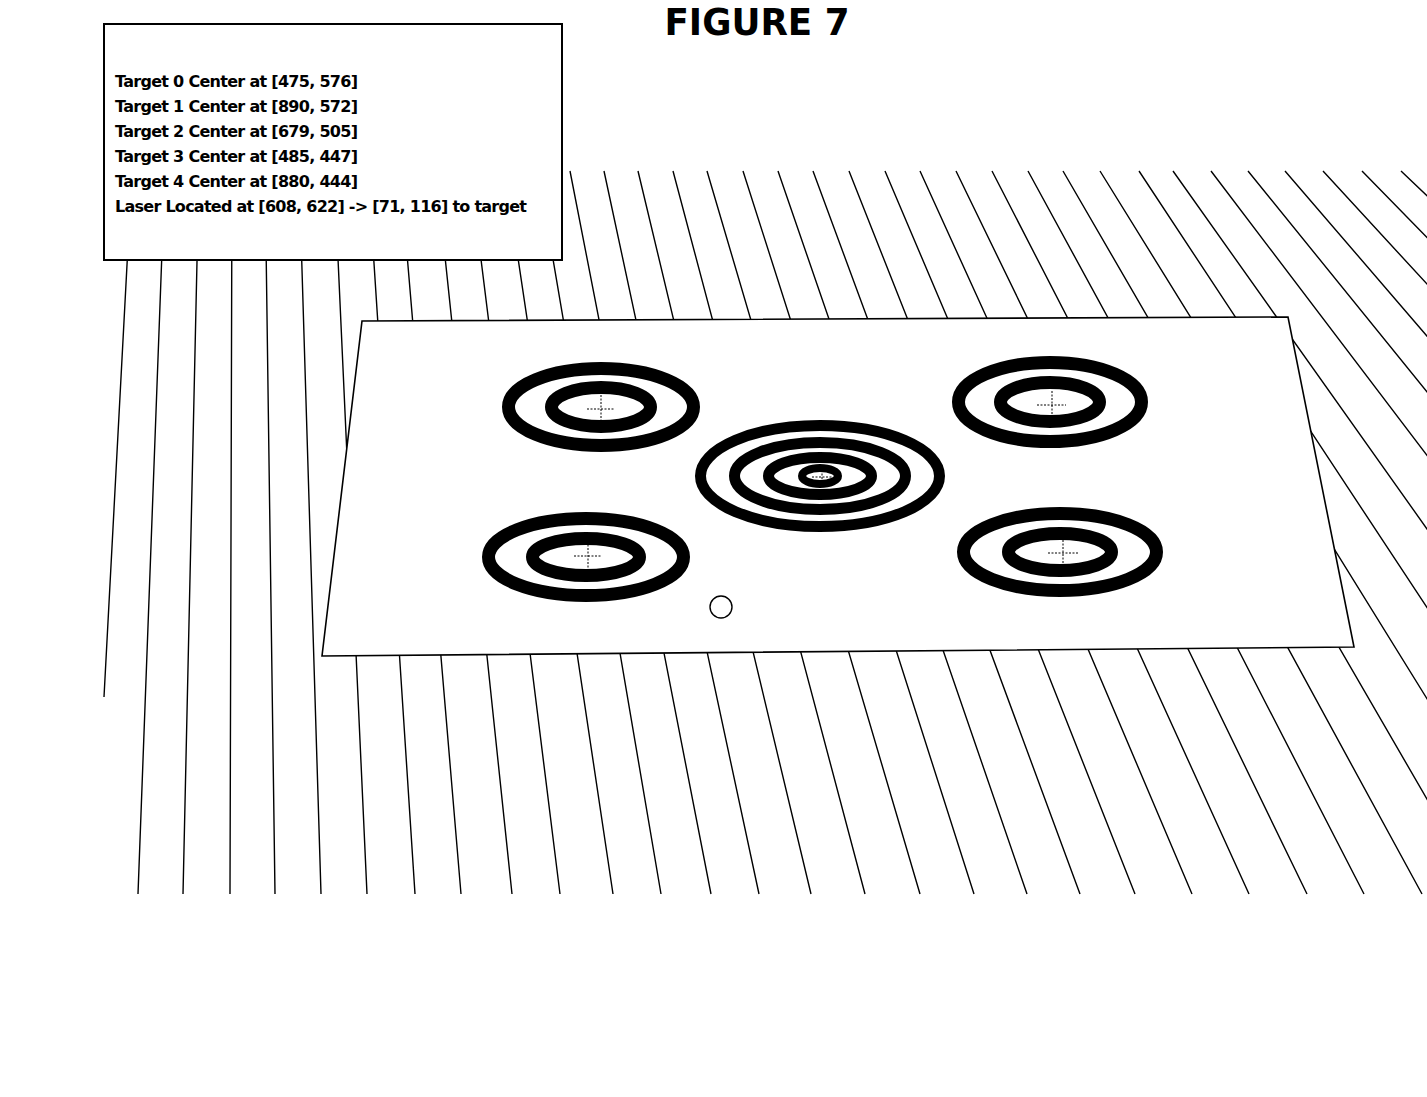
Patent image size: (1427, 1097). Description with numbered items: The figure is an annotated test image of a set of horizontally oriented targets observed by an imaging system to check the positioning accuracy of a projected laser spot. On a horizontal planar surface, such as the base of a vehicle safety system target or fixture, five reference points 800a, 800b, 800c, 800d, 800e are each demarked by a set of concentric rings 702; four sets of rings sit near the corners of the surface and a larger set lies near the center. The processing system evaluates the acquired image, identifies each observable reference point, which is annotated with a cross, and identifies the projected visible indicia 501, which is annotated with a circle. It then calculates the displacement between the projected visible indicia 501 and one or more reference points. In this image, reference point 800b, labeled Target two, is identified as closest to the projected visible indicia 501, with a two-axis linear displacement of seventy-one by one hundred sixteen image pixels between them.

The concentric rings 702 is at (496, 398).
The reference point 800a is at (616, 396).
The reference point 800b is at (582, 546).
The reference point 800c is at (1066, 543).
The reference point 800d is at (1064, 397).
The reference point 800e is at (825, 486).
The projected visible indicia 501 is at (711, 618).